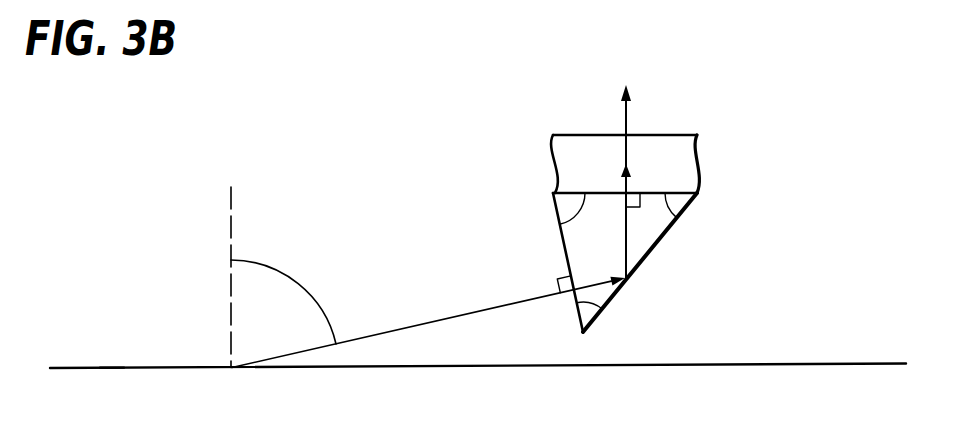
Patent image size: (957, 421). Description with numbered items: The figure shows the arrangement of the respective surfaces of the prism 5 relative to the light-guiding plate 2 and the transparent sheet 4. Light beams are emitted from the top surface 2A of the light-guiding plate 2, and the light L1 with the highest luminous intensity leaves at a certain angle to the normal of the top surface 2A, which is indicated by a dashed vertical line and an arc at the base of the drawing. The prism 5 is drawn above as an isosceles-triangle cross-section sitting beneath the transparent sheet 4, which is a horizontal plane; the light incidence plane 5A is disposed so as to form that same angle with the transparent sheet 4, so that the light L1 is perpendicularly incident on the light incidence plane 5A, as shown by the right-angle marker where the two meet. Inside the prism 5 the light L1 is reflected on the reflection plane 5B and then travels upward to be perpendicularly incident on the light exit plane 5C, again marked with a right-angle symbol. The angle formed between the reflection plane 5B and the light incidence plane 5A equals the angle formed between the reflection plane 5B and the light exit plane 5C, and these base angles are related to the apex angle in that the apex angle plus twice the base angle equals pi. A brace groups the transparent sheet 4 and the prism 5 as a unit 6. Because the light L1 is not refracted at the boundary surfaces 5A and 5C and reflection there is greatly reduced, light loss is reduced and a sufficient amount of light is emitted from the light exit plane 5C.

The light-guiding plate 2 is at (182, 390).
The top surface 2A is at (112, 354).
The transparent sheet 4 is at (675, 154).
The prism 5 is at (636, 262).
The light incidence plane 5A is at (550, 237).
The reflection plane 5B is at (656, 265).
The light exit plane 5C is at (609, 208).
The optical unit 6 is at (655, 233).
The light with the highest luminous intensity L1 is at (412, 326).